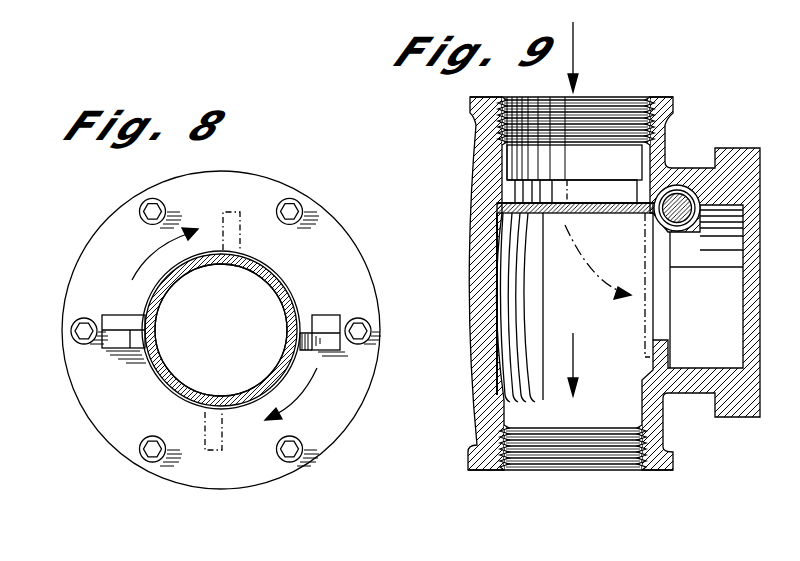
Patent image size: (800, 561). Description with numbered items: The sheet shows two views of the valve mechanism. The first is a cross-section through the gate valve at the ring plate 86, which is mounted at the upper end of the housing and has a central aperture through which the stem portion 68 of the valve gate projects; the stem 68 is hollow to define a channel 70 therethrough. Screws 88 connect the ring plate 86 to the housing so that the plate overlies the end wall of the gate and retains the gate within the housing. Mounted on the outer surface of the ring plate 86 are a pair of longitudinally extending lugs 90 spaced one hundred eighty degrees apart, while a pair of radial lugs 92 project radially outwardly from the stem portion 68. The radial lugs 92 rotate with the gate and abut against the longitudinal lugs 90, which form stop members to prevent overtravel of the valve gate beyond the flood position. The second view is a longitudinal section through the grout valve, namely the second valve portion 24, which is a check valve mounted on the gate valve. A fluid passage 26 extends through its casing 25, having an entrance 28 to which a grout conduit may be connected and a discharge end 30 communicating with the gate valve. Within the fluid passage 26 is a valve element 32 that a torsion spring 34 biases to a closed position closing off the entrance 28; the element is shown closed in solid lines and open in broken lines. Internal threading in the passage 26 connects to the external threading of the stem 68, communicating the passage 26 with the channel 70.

In FIG. 9, the second valve portion 24 is at (672, 118).
In FIG. 9, the casing 25 is at (478, 179).
In FIG. 9, the fluid passage 26 is at (530, 310).
In FIG. 9, the entrance 28 is at (592, 157).
In FIG. 9, the discharge end 30 is at (462, 467).
In FIG. 9, the valve element 32 is at (527, 216).
In FIG. 9, the torsion spring 34 is at (683, 195).
In FIG. 8, the stem portion 68 is at (278, 272).
In FIG. 8, the channel 70 is at (175, 358).
In FIG. 8, the ring plate 86 is at (87, 247).
In FIG. 8, the screws 88 is at (292, 210).
In FIG. 8, the longitudinally extending lugs 90 is at (338, 317).
In FIG. 8, the radial lugs 92 is at (240, 213).